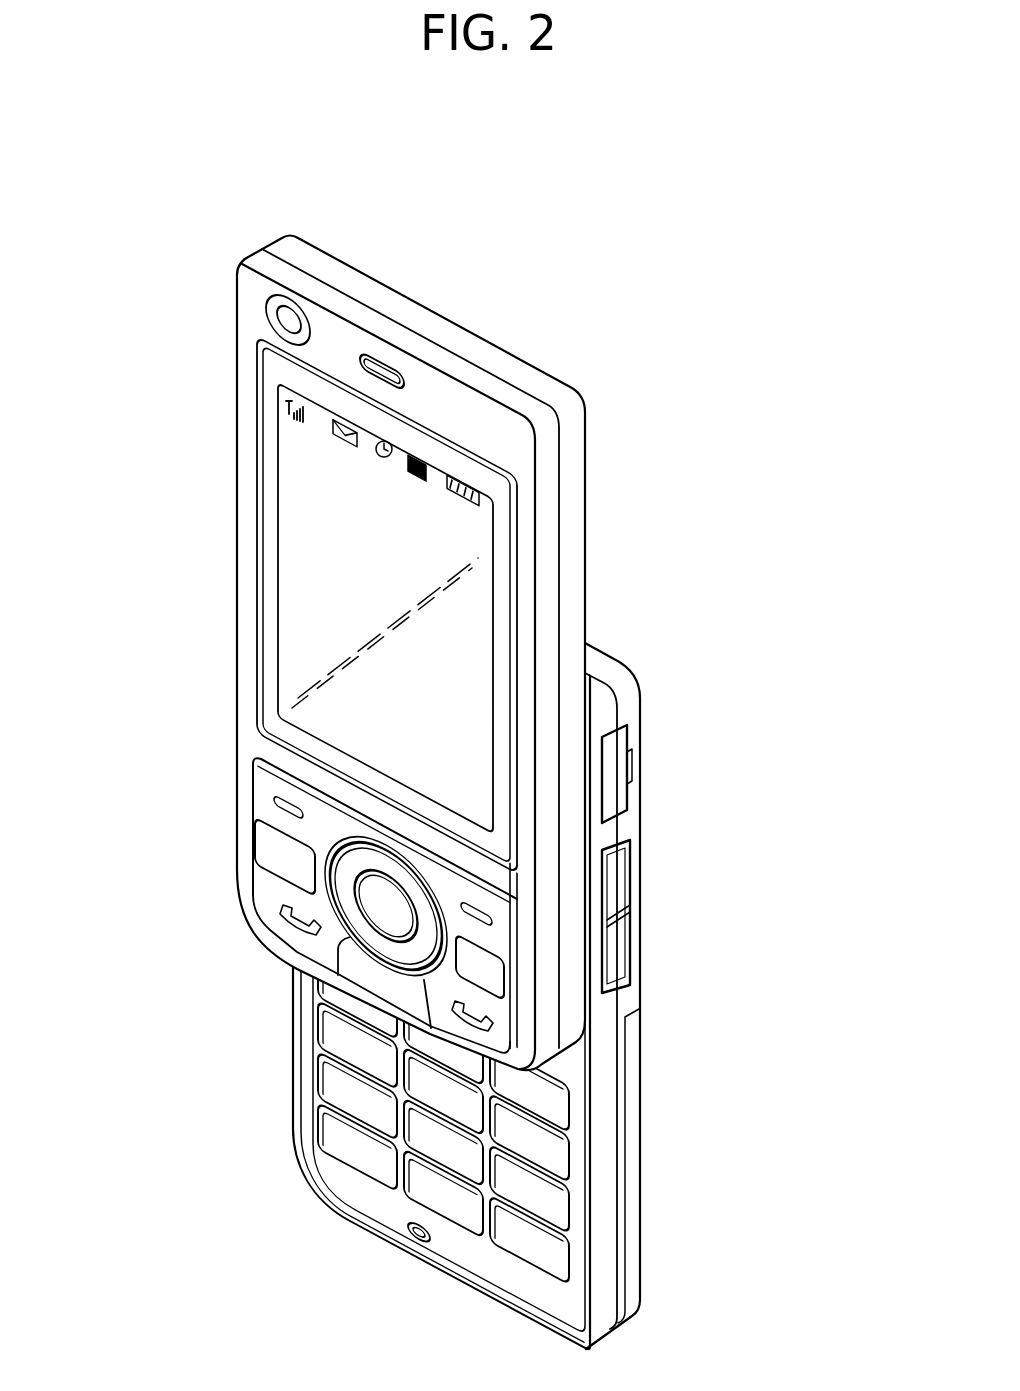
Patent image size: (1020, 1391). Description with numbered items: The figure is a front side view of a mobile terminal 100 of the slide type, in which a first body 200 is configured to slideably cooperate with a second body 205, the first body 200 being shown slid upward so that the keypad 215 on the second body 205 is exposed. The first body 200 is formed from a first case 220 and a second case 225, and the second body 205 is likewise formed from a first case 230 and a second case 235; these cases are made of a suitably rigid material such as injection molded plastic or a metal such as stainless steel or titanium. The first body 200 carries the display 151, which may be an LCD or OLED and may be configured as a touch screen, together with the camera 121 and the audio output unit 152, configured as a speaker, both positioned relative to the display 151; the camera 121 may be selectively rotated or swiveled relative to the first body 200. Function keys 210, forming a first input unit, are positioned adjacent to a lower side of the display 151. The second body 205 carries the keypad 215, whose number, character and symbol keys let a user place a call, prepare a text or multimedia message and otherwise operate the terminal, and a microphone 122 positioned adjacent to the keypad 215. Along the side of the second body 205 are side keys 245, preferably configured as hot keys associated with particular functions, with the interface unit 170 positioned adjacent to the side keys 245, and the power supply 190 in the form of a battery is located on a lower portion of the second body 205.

The mobile terminal 100 is at (621, 276).
The first body 200 is at (196, 421).
The second body 205 is at (288, 1051).
The camera 121 is at (292, 318).
The audio output unit 152 is at (385, 368).
The display 151 is at (295, 543).
The first case 220 is at (554, 523).
The second case 225 is at (580, 473).
The first case 230 is at (598, 693).
The second case 235 is at (631, 722).
The interface unit 170 is at (618, 766).
The side keys 245 is at (624, 951).
The power supply 190 is at (636, 1136).
The function keys 210 is at (272, 846).
The keypad 215 is at (332, 1122).
The microphone 122 is at (419, 1247).